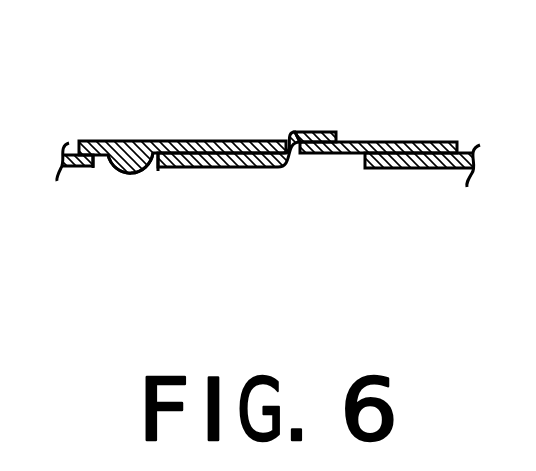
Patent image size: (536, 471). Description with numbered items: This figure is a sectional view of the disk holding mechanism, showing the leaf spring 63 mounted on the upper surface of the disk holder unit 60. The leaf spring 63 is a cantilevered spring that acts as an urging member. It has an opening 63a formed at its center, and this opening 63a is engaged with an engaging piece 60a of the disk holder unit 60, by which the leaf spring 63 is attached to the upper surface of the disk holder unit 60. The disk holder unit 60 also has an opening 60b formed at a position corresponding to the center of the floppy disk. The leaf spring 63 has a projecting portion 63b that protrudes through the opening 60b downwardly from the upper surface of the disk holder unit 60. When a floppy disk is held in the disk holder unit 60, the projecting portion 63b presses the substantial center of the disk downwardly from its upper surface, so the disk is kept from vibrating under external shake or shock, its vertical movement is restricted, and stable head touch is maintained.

The disk holder unit 60 is at (433, 168).
The engaging piece 60a is at (314, 131).
The opening 60b is at (163, 166).
The leaf spring 63 is at (404, 143).
The opening 63a is at (225, 144).
The projecting portion 63b is at (133, 179).